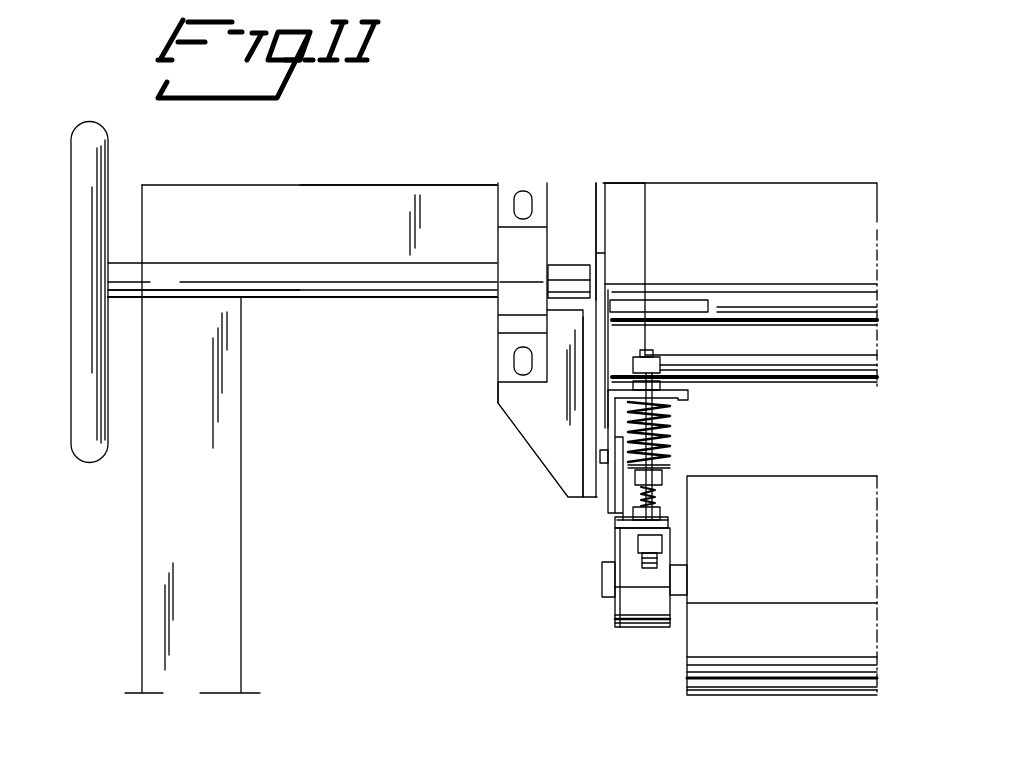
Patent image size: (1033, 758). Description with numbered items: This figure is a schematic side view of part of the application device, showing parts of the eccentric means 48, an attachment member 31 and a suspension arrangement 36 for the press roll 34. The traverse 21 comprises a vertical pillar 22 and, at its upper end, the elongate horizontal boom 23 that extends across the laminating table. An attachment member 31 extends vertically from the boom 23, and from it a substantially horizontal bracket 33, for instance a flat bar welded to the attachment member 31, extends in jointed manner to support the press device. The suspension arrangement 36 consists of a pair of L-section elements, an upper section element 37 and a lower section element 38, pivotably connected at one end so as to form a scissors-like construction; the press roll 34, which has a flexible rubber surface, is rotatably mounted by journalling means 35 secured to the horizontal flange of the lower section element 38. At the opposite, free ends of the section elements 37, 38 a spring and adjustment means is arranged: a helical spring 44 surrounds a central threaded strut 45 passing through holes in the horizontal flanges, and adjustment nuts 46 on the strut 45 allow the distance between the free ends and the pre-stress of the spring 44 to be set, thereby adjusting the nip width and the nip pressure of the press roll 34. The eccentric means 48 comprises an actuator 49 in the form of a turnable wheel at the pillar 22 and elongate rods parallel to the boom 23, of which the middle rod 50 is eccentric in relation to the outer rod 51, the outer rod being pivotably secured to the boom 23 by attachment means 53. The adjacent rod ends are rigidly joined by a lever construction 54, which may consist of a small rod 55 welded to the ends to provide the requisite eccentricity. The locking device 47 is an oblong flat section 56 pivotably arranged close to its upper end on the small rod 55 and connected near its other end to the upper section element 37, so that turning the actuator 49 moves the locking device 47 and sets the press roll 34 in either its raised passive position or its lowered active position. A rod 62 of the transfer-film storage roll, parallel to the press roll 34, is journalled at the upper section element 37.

The traverse 21 is at (427, 178).
The vertical pillar 22 is at (230, 423).
The boom 23 is at (318, 190).
The attachment member 31 is at (527, 425).
The bracket 33 is at (590, 472).
The press roll 34 is at (697, 665).
The journalling means 35 is at (605, 570).
The suspension arrangement 36 is at (632, 598).
The upper section element 37 is at (690, 398).
The lower section element 38 is at (635, 522).
The helical spring 44 is at (672, 425).
The threaded strut 45 is at (658, 497).
The adjustment nut 46 is at (635, 369).
The locking device 47 is at (580, 175).
The eccentric means 48 is at (205, 255).
The actuator 49 is at (75, 132).
The middle rod 50 is at (762, 300).
The outer rod 51 is at (276, 283).
The attachment means 53 is at (505, 317).
The lever construction 54 is at (572, 293).
The small rod 55 is at (673, 303).
The flat section 56 is at (623, 197).
The rod 62 is at (820, 365).